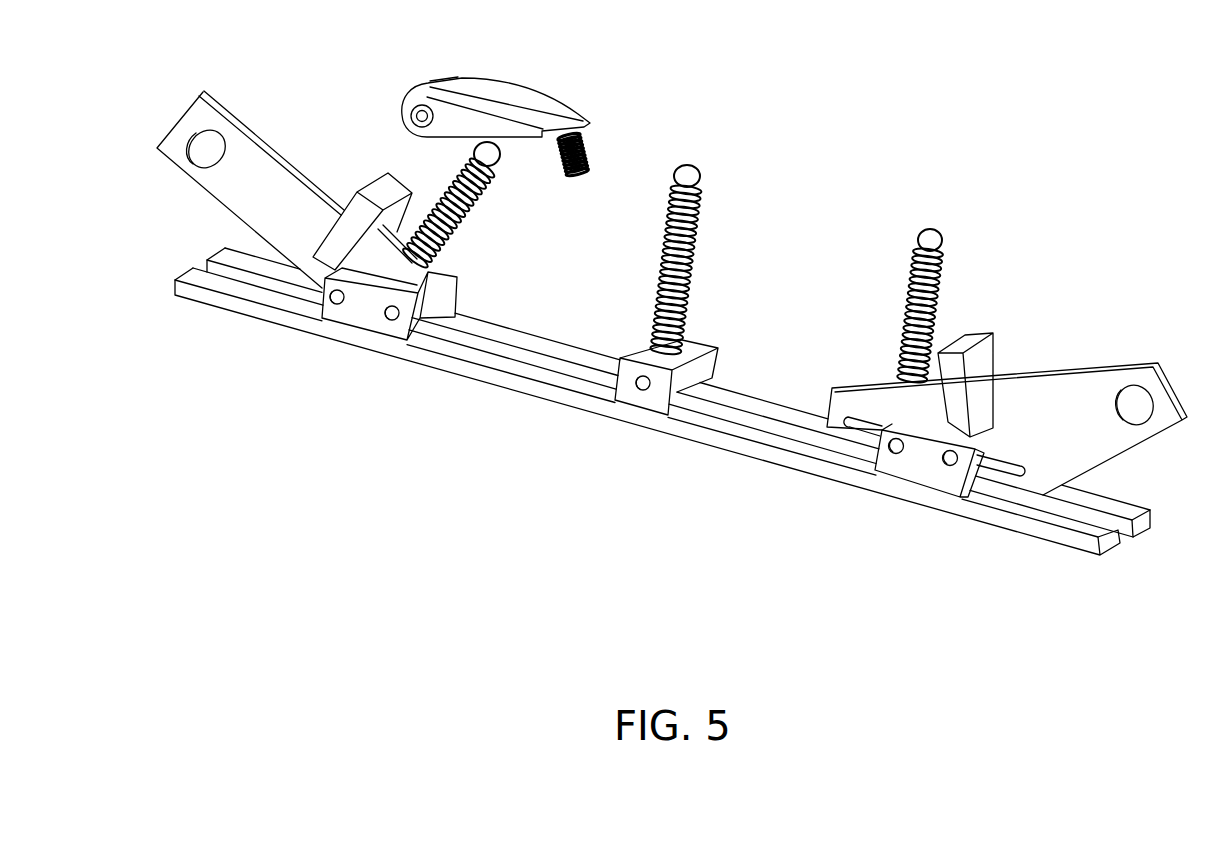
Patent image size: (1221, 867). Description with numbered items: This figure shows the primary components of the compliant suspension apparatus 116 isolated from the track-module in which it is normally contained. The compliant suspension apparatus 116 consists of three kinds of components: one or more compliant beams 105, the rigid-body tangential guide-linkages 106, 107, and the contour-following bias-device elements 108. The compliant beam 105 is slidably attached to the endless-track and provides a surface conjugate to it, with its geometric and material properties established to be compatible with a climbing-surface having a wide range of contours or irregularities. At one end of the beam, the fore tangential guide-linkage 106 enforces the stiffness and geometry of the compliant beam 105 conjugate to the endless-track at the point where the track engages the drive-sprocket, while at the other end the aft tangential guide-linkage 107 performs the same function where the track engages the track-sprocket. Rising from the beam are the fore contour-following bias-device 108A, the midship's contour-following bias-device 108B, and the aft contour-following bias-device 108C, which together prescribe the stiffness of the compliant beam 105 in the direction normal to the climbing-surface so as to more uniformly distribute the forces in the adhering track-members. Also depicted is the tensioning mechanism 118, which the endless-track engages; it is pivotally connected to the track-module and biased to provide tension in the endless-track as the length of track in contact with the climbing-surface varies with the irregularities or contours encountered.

The compliant beam 105 is at (480, 383).
The fore tangential guide-linkage 106 is at (270, 167).
The aft tangential guide-linkage 107 is at (1077, 380).
The contour-following bias-device 108 is at (728, 263).
The fore contour-following bias-device 108A is at (447, 240).
The midship's contour-following bias-device 108B is at (697, 247).
The aft contour-following bias-device 108C is at (937, 308).
The compliant suspension apparatus 116 is at (645, 403).
The tensioning mechanism 118 is at (537, 92).